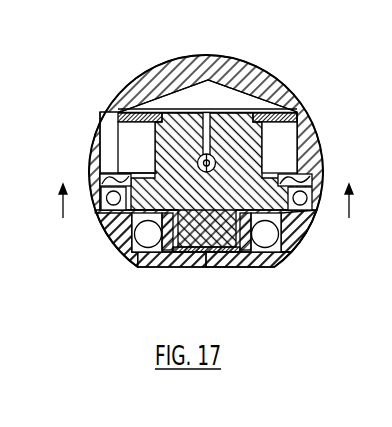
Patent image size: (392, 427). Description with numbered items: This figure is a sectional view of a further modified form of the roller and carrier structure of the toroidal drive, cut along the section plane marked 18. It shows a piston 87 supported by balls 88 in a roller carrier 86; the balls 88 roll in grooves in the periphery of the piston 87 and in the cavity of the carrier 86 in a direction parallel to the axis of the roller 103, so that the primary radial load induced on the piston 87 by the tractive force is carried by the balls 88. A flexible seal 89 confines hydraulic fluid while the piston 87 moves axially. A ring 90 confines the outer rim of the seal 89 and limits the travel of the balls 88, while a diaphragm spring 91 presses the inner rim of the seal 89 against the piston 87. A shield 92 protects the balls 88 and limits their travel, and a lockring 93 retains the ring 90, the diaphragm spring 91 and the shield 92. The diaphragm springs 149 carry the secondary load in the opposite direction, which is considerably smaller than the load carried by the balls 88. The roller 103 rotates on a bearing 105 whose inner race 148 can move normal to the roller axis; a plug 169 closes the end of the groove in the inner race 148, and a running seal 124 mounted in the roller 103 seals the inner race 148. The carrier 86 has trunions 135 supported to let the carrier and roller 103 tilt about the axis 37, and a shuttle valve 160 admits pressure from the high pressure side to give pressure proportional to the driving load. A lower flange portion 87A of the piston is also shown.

The roller carrier 86 is at (210, 55).
The shuttle valve 160 is at (226, 110).
The diaphragm springs 149 is at (143, 112).
The tilt axis 37 is at (183, 160).
The piston 87 is at (157, 163).
The balls 88 is at (101, 192).
The section line 18- 18 is at (85, 199).
The lockring 93 is at (104, 206).
The shield 92 is at (105, 232).
The running seal 124 is at (128, 251).
The bearing 105 is at (140, 255).
The inner race 148 is at (174, 252).
The plug 169 is at (203, 268).
The block flange 87A is at (230, 265).
The roller 103 is at (286, 244).
The diaphragm spring 91 is at (291, 176).
The trunions 135 is at (252, 133).
The flexible seal 89 is at (312, 178).
The ring 90 is at (320, 181).